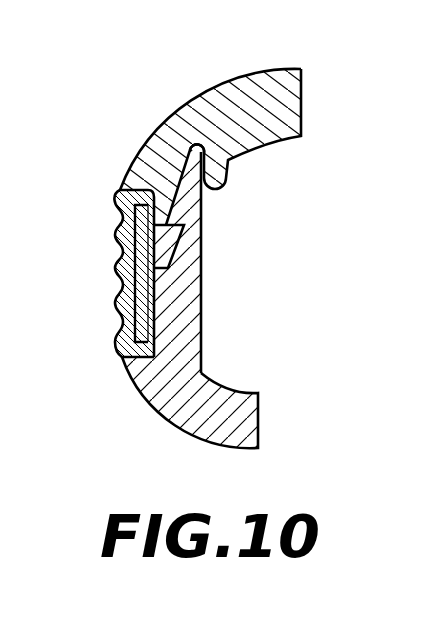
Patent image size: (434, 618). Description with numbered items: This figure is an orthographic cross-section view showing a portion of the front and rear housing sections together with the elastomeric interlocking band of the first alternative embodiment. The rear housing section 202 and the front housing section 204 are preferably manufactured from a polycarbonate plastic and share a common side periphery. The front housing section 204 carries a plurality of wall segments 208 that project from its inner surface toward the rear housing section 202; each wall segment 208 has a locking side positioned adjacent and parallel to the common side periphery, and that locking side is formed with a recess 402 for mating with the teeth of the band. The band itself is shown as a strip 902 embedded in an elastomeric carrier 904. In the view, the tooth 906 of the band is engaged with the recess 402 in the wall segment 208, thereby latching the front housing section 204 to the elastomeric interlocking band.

The rear housing section 202 is at (262, 71).
The front housing section 204 is at (222, 446).
The wall segment 208 is at (202, 305).
The recess 402 is at (117, 262).
The strip 902 is at (112, 320).
The elastomeric carrier 904 is at (118, 265).
The tooth 906 is at (177, 268).